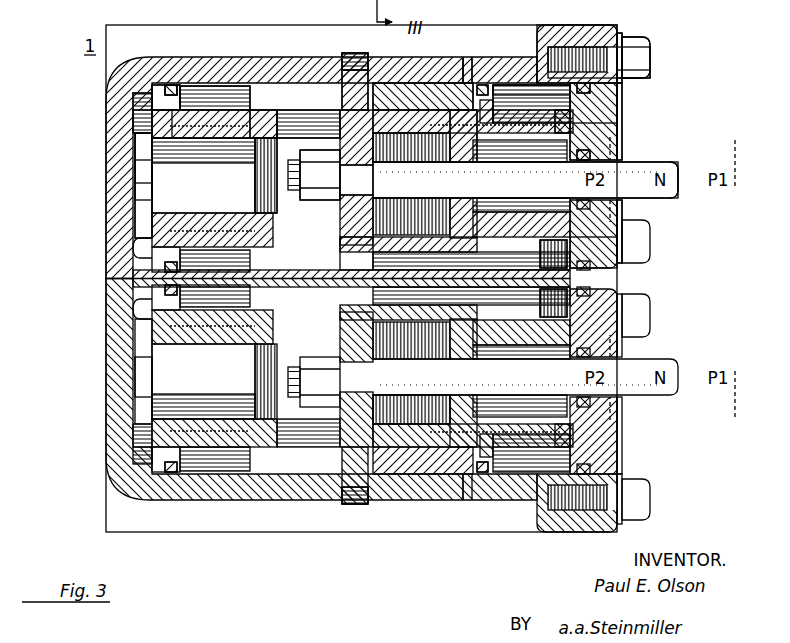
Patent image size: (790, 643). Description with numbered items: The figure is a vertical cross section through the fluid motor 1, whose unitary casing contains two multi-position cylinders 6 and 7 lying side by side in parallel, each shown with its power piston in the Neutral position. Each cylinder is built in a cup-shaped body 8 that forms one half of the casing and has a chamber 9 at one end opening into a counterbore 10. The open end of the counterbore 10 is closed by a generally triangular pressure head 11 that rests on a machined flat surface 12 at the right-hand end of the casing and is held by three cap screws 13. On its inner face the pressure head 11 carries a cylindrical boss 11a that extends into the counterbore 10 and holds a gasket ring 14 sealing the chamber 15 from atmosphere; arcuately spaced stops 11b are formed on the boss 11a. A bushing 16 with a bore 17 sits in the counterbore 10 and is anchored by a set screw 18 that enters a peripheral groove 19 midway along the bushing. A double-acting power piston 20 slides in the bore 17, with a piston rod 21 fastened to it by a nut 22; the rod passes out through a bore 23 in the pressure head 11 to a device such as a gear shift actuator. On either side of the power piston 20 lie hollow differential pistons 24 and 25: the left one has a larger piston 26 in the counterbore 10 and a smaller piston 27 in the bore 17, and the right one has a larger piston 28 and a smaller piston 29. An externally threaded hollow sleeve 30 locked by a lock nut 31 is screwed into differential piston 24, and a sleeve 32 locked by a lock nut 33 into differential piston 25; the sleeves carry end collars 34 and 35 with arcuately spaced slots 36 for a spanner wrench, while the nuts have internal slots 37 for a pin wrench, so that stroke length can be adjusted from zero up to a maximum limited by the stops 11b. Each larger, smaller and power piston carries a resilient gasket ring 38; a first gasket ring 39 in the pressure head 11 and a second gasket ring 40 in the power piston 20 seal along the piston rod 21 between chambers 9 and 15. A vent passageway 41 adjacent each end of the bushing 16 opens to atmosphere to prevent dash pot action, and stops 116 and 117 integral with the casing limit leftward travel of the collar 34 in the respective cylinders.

The fluid motor 1 is at (361, 278).
The multi-position cylinder 6 is at (470, 52).
The multi-position cylinder 7 is at (470, 504).
The cup-shaped body 8 is at (530, 85).
The chamber 9 is at (148, 195).
The counterbore 10 is at (548, 62).
The pressure head 11 is at (612, 110).
The cylindrical boss 11a is at (600, 95).
The stops 11b is at (620, 125).
The flat surface 12 is at (630, 37).
The cap screws 13 is at (649, 58).
The gasket ring 14 is at (618, 83).
The chamber 15 is at (625, 73).
The bushing 16 is at (305, 120).
The bore 17 is at (318, 110).
The set screw 18 is at (352, 53).
The peripheral groove 19 is at (345, 265).
The power piston 20 is at (340, 140).
The piston rod 21 is at (518, 189).
The nut 22 is at (337, 197).
The bore 23 is at (650, 198).
The differential piston 24 is at (185, 85).
The differential piston 25 is at (445, 108).
The larger piston 26 is at (150, 90).
The smaller piston 27 is at (265, 125).
The larger piston 28 is at (520, 95).
The smaller piston 29 is at (363, 93).
The hollow sleeve 30 is at (140, 160).
The lock nut 31 is at (250, 110).
The hollow sleeve 32 is at (562, 120).
The lock nut 33 is at (568, 212).
The end collar 34 is at (163, 133).
The end collar 35 is at (575, 245).
The slots 36 is at (157, 123).
The internal slots 37 is at (253, 148).
The resilient gasket ring 38 is at (170, 92).
The first resilient gasket ring 39 is at (585, 155).
The second resilient gasket ring 40 is at (355, 187).
The vent passageway 41 is at (253, 110).
The stop 116 is at (145, 370).
The stop 117 is at (145, 183).